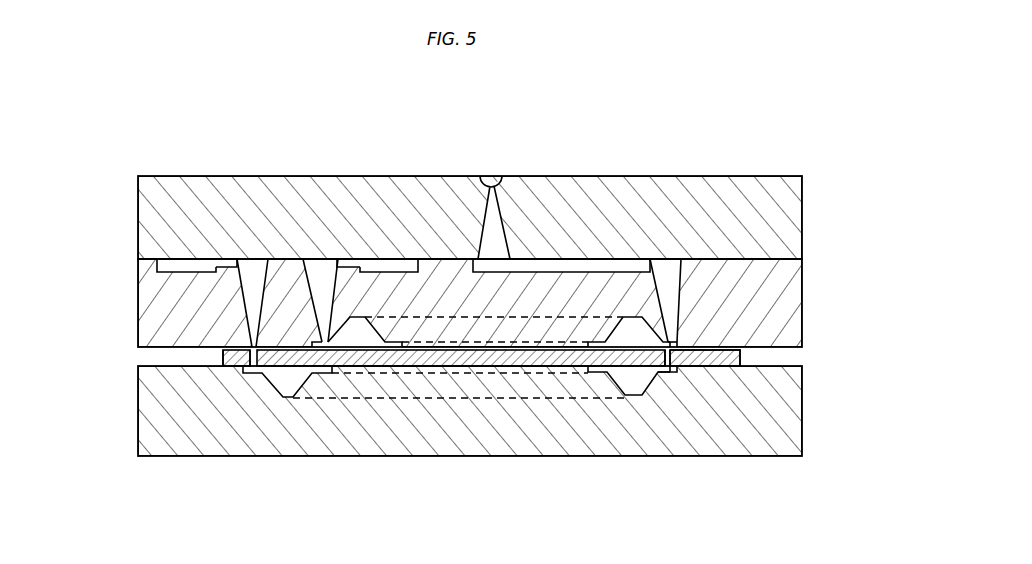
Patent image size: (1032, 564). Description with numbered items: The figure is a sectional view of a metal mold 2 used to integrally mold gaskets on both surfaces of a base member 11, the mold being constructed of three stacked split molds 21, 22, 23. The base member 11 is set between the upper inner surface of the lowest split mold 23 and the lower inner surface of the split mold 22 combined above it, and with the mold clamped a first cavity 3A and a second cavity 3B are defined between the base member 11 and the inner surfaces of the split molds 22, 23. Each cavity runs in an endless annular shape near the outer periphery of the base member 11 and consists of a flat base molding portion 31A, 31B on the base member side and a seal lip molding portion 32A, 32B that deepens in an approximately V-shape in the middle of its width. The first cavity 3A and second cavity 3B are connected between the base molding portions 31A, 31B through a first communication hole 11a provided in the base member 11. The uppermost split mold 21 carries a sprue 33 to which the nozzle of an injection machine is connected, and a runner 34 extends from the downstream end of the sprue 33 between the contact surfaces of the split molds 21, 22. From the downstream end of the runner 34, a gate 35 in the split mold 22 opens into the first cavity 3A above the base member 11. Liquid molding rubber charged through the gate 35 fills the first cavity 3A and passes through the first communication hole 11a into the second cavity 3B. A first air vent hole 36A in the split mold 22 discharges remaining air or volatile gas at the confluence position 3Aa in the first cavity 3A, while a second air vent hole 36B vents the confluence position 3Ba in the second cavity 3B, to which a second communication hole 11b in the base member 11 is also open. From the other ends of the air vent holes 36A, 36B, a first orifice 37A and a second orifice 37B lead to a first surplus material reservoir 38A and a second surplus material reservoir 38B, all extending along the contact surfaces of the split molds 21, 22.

The metal mold 2 is at (773, 171).
The split mold 21 is at (728, 198).
The split mold 22 is at (770, 293).
The split mold 23 is at (735, 443).
The sprue 33 is at (492, 177).
The runner 34 is at (543, 267).
The gate 35 is at (678, 333).
The second surplus material reservoir 38B is at (170, 268).
The second orifice 37B is at (227, 266).
The second air vent hole 36B is at (255, 268).
The first air vent hole 36A is at (323, 268).
The first orifice 37A is at (350, 266).
The first surplus material reservoir 38A is at (392, 268).
The first cavity 3A is at (655, 259).
The seal lip molding portion 32A is at (636, 315).
The confluence position 3Aa is at (358, 337).
The base molding portion 31A is at (678, 343).
The base member 11 is at (478, 363).
The first communication hole 11a is at (683, 357).
The second communication hole 11b is at (247, 358).
The confluence position 3Ba is at (287, 395).
The seal lip molding portion 32B is at (633, 396).
The second cavity 3B is at (625, 380).
The base molding portion 31B is at (667, 373).